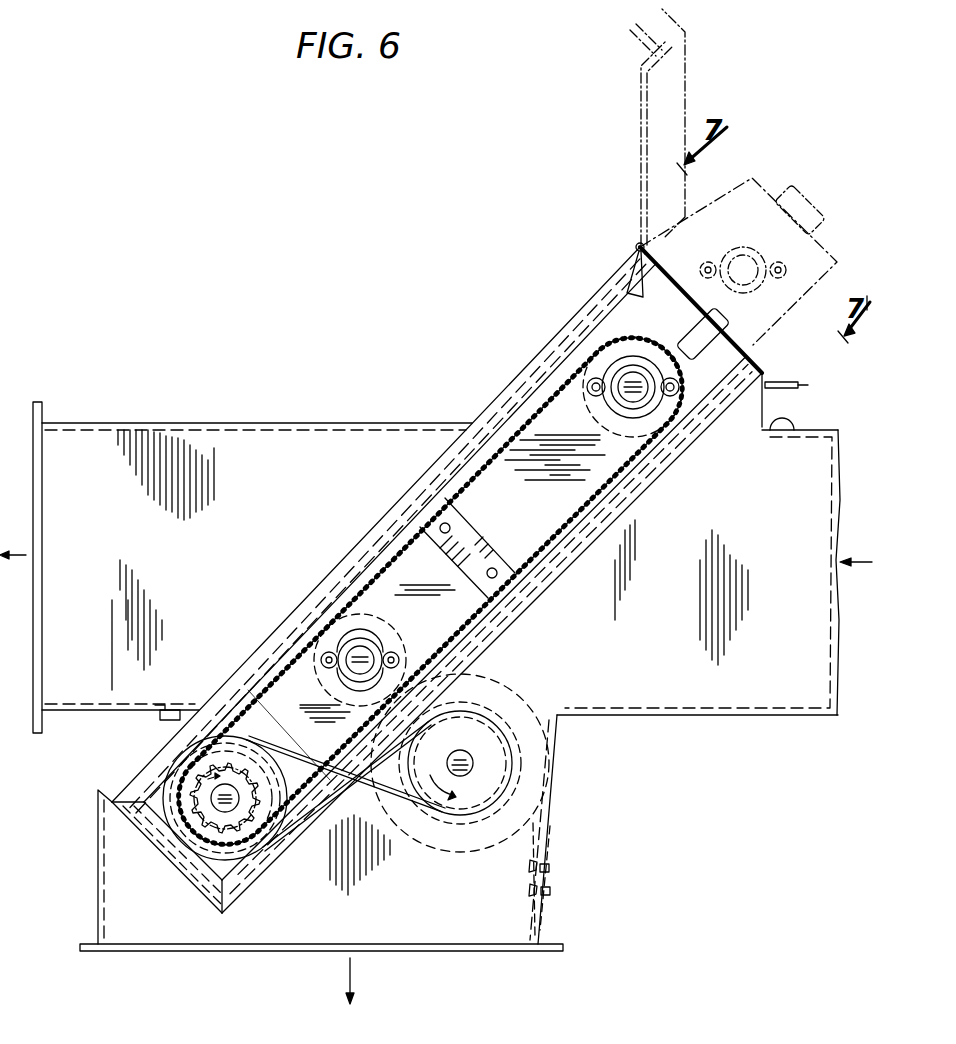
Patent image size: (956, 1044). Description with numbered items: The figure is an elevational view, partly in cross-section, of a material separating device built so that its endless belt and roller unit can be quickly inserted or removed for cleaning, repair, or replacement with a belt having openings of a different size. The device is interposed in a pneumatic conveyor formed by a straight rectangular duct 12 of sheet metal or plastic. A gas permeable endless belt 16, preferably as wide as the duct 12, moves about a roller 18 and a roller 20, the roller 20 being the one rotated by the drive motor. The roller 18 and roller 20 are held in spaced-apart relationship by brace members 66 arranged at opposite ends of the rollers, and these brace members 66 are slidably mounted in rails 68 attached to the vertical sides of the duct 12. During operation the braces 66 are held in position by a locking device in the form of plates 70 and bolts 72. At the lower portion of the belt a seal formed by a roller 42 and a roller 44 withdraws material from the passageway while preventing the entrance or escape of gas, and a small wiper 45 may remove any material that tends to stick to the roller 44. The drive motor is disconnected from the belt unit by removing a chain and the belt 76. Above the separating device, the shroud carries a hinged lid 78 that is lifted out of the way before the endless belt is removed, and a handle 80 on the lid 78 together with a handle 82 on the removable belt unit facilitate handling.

The duct 12 is at (208, 568).
The endless belt 16 is at (703, 392).
The roller 18 is at (612, 408).
The roller 20 is at (256, 748).
The roller 42 is at (386, 626).
The roller 44 is at (467, 824).
The wiper 45 is at (540, 827).
The brace member 66 is at (545, 508).
The rail 68 is at (343, 570).
The plate 70 is at (478, 530).
The bolt 72 is at (486, 576).
The belt 76 is at (339, 797).
The hinged lid 78 is at (640, 126).
The handle 80 is at (632, 54).
The handle 82 is at (818, 214).